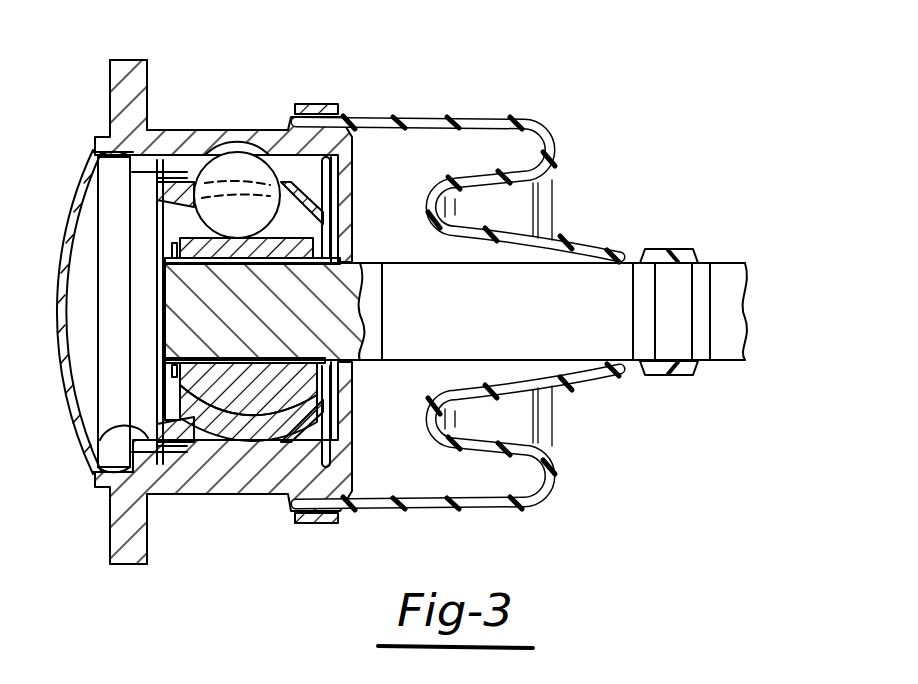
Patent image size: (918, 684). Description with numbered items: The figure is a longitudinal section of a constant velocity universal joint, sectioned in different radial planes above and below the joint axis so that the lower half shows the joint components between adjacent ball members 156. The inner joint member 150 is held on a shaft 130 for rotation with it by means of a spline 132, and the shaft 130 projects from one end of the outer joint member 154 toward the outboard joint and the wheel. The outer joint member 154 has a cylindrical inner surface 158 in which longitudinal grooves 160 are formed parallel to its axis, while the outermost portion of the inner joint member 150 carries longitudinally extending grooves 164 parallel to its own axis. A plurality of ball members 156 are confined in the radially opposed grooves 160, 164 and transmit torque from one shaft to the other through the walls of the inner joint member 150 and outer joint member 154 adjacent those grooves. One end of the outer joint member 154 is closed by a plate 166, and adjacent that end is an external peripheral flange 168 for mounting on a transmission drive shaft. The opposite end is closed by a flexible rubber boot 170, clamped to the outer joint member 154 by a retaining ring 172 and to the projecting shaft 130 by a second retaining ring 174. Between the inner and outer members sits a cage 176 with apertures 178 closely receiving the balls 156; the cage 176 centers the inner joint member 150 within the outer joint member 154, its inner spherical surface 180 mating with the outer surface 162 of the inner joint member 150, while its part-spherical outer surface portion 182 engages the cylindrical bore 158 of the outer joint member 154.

The shaft 130 is at (738, 286).
The spline 132 is at (180, 381).
The inner joint member 150 is at (312, 253).
The outer joint member 154 is at (206, 150).
The ball members 156 is at (248, 154).
The cylindrical inner surface 158 is at (104, 432).
The longitudinal grooves 160 is at (94, 152).
The outer surface 162 is at (206, 200).
The longitudinally extending grooves 164 is at (313, 227).
The plate 166 is at (57, 309).
The external peripheral flange 168 is at (138, 60).
The flexible rubber boot 170 is at (555, 152).
The retaining ring 172 is at (331, 104).
The second retaining ring 174 is at (666, 249).
The cage 176 is at (326, 440).
The apertures 178 is at (194, 182).
The inner spherical surface 180 is at (324, 196).
The part-spherical outer surface portion 182 is at (185, 173).